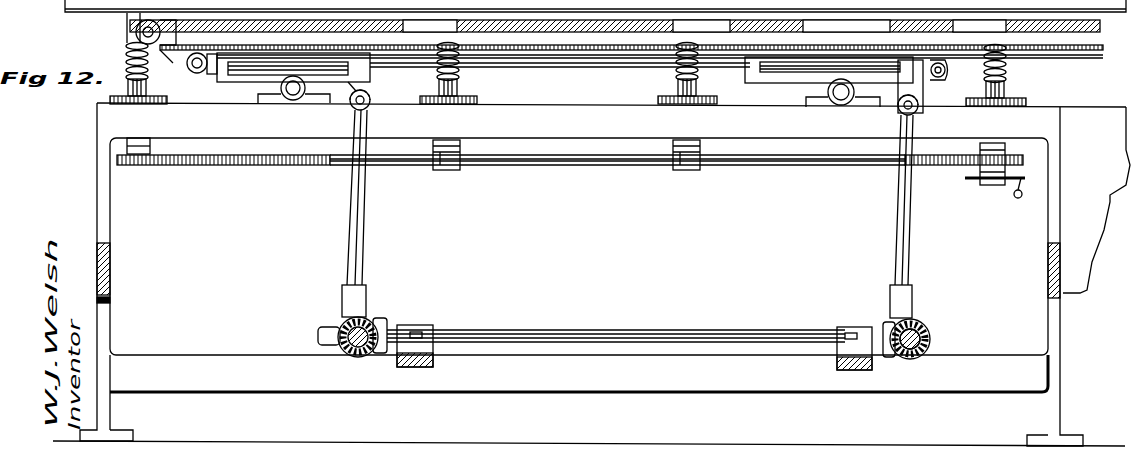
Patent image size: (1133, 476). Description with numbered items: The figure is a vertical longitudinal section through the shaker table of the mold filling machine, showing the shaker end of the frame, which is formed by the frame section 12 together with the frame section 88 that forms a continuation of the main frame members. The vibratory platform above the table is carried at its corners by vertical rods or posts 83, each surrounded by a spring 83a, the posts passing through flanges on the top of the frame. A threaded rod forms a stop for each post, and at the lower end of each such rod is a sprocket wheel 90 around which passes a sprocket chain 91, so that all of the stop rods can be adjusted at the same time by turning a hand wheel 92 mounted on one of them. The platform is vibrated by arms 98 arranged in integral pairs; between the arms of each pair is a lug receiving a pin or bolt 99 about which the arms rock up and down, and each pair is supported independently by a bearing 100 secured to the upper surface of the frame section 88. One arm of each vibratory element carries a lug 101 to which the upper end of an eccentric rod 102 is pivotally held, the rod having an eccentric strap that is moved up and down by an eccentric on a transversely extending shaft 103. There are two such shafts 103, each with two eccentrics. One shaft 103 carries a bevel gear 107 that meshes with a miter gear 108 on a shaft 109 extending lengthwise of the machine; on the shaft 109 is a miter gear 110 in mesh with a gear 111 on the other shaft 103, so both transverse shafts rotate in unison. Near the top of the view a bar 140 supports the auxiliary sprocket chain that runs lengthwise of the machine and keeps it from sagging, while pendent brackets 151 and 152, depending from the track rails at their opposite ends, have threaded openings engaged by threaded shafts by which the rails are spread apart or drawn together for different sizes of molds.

The frame section 12 is at (591, 274).
The vertical rod or post 83 is at (461, 76).
The spring 83a is at (676, 70).
The frame section 88 is at (501, 372).
The sprocket wheel 90 is at (441, 171).
The sprocket chain 91 is at (590, 167).
The hand wheel 92 is at (975, 179).
The arm 98 is at (233, 83).
The pin or bolt 99 is at (291, 101).
The bearing 100 is at (272, 100).
The lug 101 is at (417, 91).
The eccentric rod 102 is at (366, 208).
The transverse shaft 103 is at (368, 320).
The bevel gear 107 is at (350, 353).
The bevel or miter gear 108 is at (378, 353).
The shaft 109 is at (520, 322).
The miter gear 110 is at (880, 325).
The gear 111 is at (932, 343).
The bar 140 is at (597, 48).
The pendent bracket 151 is at (970, 98).
The pendent bracket 152 is at (188, 72).